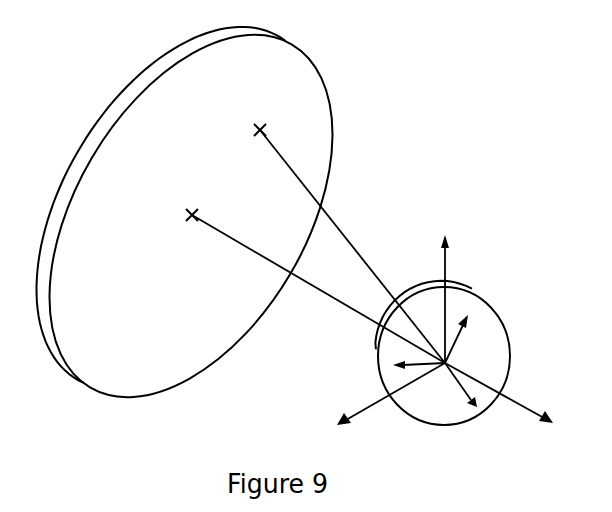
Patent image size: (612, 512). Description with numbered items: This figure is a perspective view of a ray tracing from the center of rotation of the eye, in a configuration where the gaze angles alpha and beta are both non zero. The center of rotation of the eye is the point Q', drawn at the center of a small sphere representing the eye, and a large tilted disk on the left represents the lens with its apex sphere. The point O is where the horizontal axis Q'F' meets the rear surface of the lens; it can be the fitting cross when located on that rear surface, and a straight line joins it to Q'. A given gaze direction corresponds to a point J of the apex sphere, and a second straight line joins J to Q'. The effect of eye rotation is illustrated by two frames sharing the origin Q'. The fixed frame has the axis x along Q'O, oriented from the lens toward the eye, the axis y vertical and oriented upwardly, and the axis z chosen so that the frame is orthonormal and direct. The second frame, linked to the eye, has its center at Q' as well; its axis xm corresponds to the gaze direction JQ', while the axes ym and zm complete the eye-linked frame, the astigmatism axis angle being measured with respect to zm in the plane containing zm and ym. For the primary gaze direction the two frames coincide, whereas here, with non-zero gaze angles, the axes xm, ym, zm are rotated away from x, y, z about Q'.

The point O is at (222, 223).
The point J is at (340, 243).
The center of rotation of the eye Q' is at (442, 353).
The x axis x is at (499, 404).
The y axis y is at (450, 296).
The z axis z is at (391, 404).
The x_m axis xm is at (454, 387).
The y_m axis ym is at (468, 339).
The z_m axis zm is at (413, 352).